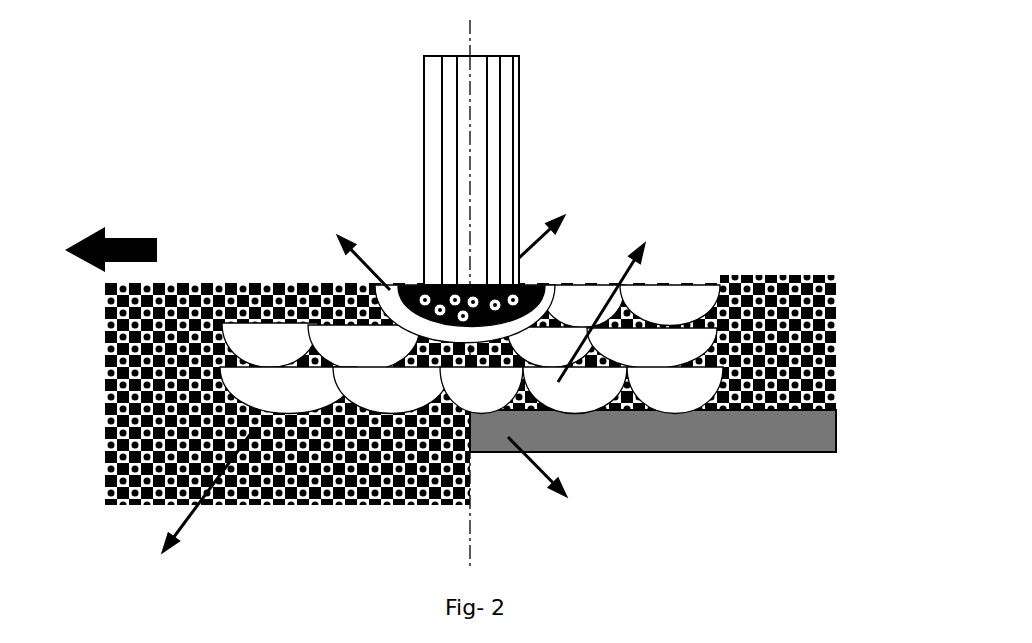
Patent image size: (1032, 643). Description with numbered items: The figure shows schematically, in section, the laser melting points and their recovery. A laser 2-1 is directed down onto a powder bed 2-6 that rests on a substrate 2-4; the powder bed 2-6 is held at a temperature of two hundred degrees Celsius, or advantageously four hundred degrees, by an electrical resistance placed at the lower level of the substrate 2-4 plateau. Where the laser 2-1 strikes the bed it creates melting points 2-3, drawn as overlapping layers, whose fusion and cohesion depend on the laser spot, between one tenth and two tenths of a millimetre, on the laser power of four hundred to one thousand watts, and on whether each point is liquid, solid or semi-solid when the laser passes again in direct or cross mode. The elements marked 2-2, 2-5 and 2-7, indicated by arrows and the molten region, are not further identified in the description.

The laser 2-1 is at (520, 190).
The arc heat / energy direction 2-2 is at (535, 285).
The melting points 2-3 is at (630, 285).
The substrate 2-4 is at (840, 440).
The travel direction arrow 2-5 is at (128, 235).
The powder bed 2-6 is at (183, 520).
The weld pool 2-7 is at (395, 290).